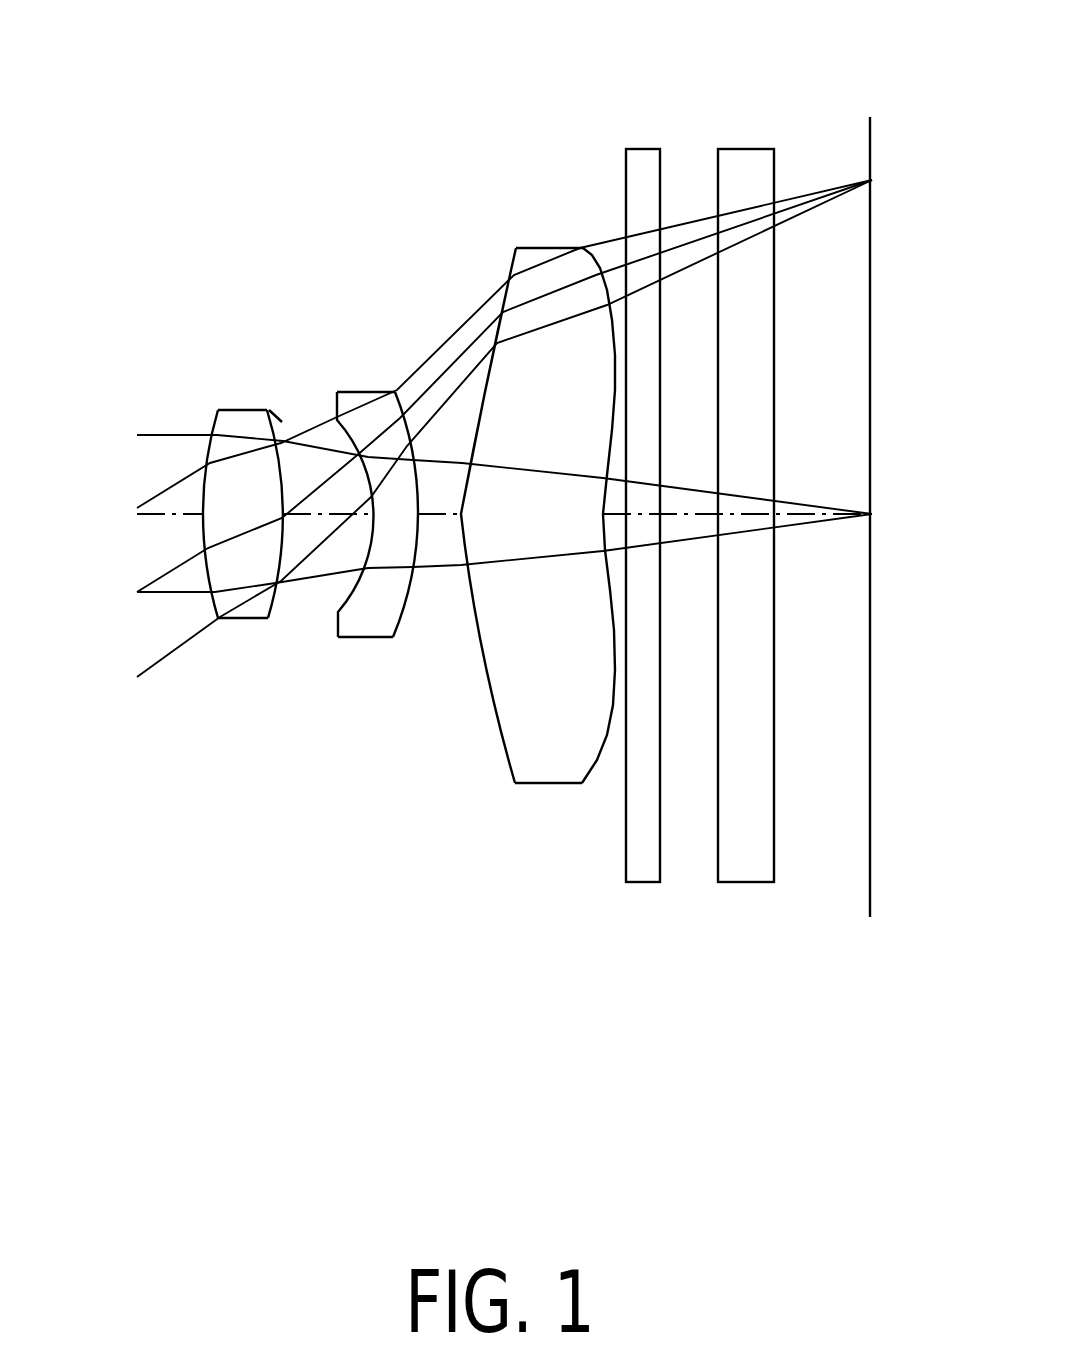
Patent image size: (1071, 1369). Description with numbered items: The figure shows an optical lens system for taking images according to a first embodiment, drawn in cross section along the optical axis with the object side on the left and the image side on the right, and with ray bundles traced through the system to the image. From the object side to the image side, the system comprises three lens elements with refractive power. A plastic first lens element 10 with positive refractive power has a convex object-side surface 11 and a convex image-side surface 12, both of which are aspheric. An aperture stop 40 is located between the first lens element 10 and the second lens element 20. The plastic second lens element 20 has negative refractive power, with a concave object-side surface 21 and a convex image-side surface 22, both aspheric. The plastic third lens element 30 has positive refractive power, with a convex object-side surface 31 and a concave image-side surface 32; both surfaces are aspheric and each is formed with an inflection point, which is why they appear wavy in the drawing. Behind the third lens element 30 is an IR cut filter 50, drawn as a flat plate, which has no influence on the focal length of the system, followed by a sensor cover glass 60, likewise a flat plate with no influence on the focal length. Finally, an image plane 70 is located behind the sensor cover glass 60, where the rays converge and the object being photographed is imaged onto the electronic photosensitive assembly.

The first lens element 10 is at (187, 522).
The object-side surface of the first lens element 11 is at (202, 601).
The image-side surface of the first lens element 12 is at (285, 597).
The second lens element 20 is at (378, 519).
The object-side surface of the second lens element 21 is at (339, 600).
The image-side surface of the second lens element 22 is at (396, 630).
The third lens element 30 is at (552, 532).
The object-side surface of the third lens element 31 is at (494, 697).
The image-side surface of the third lens element 32 is at (610, 747).
The aperture stop 40 is at (276, 401).
The IR cut filter 50 is at (656, 170).
The sensor cover glass 60 is at (739, 158).
The image plane 70 is at (865, 131).